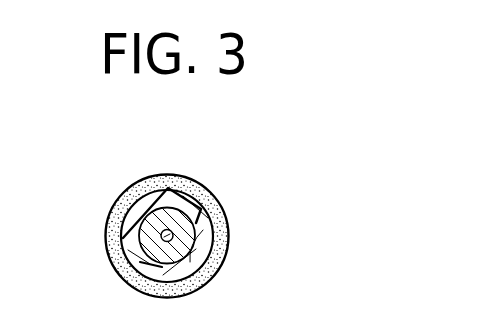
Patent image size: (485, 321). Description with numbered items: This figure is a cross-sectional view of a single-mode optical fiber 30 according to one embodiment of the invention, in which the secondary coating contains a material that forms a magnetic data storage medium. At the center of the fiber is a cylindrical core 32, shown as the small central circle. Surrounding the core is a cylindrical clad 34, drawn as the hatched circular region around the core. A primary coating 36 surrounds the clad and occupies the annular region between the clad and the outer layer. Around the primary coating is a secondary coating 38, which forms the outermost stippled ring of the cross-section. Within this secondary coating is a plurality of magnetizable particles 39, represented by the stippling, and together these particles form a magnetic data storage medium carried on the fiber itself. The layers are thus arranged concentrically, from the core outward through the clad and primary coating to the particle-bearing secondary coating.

The single-mode optical fiber 30 is at (186, 216).
The cylindrical core 32 is at (167, 229).
The cylindrical clad 34 is at (185, 245).
The primary coating 36 is at (196, 208).
The secondary coating 38 is at (110, 210).
The magnetizable particles 39 is at (222, 249).